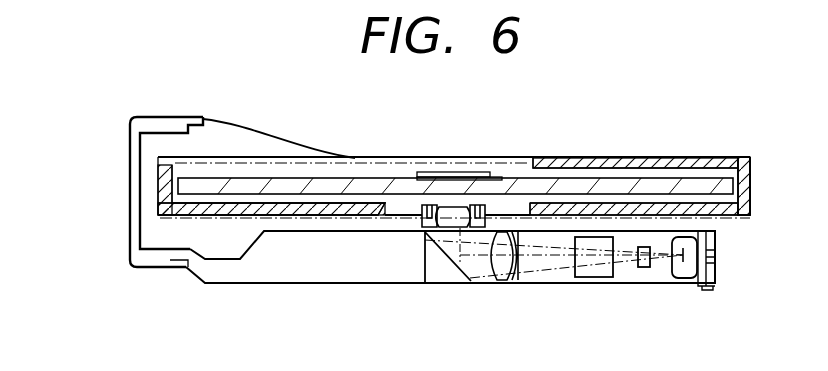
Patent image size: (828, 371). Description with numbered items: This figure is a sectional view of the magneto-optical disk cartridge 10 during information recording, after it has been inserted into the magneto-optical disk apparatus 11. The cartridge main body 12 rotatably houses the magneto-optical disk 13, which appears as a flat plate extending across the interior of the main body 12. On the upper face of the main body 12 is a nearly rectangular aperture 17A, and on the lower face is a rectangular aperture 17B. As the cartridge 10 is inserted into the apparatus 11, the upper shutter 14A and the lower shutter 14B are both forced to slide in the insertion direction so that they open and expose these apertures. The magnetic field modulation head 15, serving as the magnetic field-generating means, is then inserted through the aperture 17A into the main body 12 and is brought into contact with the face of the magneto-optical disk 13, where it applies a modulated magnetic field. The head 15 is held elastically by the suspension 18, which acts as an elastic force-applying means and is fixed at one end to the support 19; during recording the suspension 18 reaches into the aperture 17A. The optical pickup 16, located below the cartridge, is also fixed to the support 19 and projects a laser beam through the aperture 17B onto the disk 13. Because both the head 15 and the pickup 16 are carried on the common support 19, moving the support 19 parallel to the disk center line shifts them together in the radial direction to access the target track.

The magneto-optical disk cartridge 10 is at (742, 224).
The magneto-optical disk apparatus 11 is at (167, 275).
The main body 12 is at (748, 183).
The magneto-optical disk 13 is at (690, 182).
The upper shutter 14A is at (395, 157).
The lower shutter 14B is at (252, 222).
The magnetic field modulation head 15 is at (443, 206).
The optical pickup 16 is at (392, 283).
The aperture 17A is at (530, 157).
The aperture 17B is at (383, 217).
The suspension 18 is at (253, 135).
The support 19 is at (129, 160).